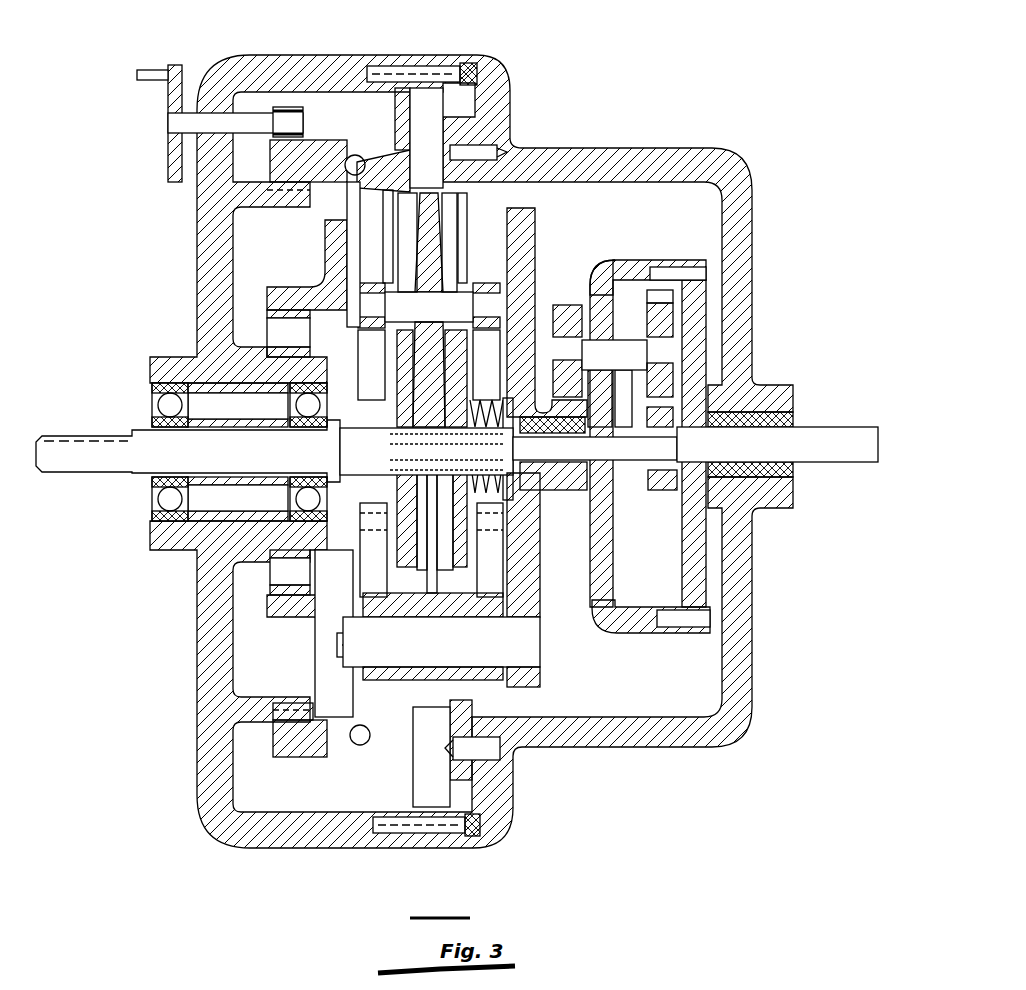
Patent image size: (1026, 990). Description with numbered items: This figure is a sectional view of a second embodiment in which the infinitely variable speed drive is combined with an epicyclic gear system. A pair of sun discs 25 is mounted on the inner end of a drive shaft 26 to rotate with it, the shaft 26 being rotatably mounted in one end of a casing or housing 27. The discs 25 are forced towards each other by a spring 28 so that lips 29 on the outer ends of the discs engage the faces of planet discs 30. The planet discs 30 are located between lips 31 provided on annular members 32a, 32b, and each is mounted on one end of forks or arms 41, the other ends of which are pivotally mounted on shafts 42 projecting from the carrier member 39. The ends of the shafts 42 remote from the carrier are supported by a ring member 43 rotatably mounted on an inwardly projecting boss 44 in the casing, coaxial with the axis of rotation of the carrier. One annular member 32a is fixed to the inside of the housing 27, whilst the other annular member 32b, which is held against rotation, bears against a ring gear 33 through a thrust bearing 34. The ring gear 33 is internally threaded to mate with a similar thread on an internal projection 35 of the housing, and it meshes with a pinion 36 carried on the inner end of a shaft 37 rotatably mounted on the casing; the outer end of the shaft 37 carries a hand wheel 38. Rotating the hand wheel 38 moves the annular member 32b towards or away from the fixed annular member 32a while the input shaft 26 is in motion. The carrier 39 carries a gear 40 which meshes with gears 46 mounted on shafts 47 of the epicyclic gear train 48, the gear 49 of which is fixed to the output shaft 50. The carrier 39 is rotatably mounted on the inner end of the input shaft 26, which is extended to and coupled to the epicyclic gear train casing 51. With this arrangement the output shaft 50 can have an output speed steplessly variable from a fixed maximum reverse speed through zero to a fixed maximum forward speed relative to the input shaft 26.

The sun discs 25 is at (440, 574).
The drive shaft 26 is at (88, 464).
The casing or housing 27 is at (200, 226).
The spring 28 is at (508, 495).
The lips 29 is at (425, 338).
The planet discs 30 is at (440, 232).
The lips 31 is at (434, 195).
The annular member 32a is at (509, 142).
The annular member 32b is at (398, 170).
The ring gear 33 is at (327, 160).
The thrust bearing 34 is at (356, 158).
The internal projection 35 is at (274, 194).
The pinion 36 is at (288, 106).
The shaft 37 is at (206, 112).
The hand wheel 38 is at (172, 64).
The carrier member 39 is at (530, 603).
The gear 40 is at (590, 513).
The forks or arms 41 is at (372, 583).
The shafts 42 is at (523, 655).
The ring member 43 is at (333, 253).
The inwardly projecting boss 44 is at (317, 357).
The gears 46 is at (567, 305).
The shafts 47 is at (627, 357).
The epicyclic gear train 48 is at (637, 247).
The gear 49 is at (660, 490).
The output shaft 50 is at (843, 438).
The epicyclic gear train casing 51 is at (623, 634).